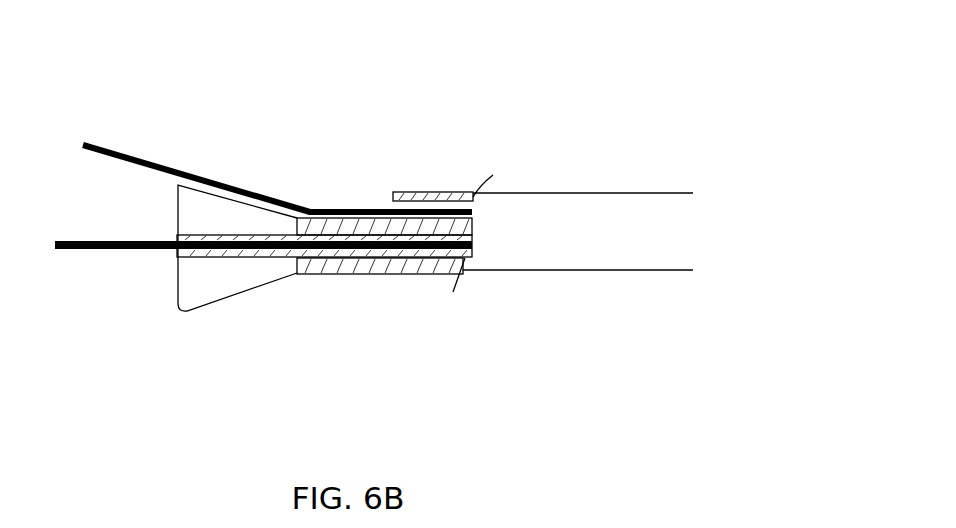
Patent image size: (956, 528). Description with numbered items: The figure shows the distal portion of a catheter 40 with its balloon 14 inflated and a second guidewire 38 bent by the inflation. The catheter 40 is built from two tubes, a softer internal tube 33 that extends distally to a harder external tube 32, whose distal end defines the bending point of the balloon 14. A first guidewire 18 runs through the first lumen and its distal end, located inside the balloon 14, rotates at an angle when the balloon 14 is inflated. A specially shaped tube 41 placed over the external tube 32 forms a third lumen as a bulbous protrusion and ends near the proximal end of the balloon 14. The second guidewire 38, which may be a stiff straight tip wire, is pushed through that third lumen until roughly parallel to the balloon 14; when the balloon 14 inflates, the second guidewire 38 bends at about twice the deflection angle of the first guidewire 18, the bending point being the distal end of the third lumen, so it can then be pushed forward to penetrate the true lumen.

The balloon 14 is at (213, 287).
The guidewire 18 is at (102, 250).
The external tube 32 is at (425, 270).
The internal tube 33 is at (348, 208).
The second guidewire 38 is at (165, 163).
The catheter 40 is at (593, 252).
The tube 41 is at (441, 196).